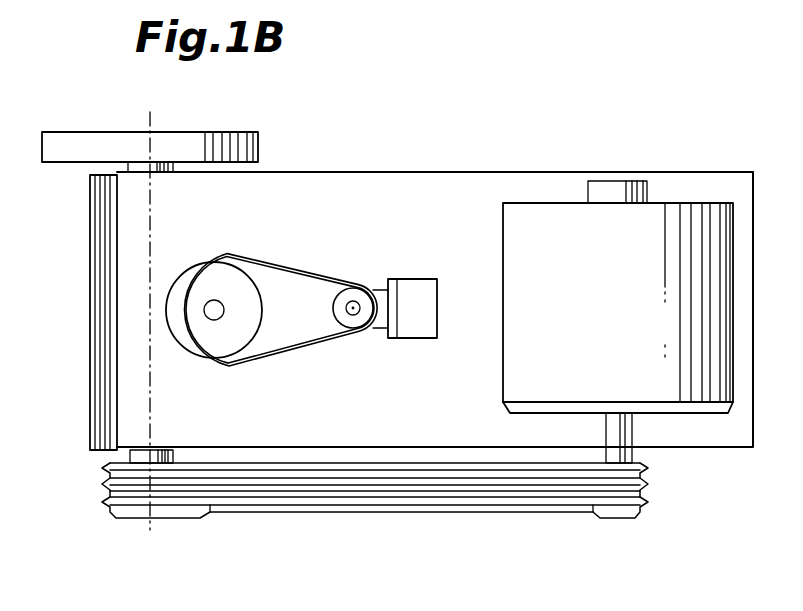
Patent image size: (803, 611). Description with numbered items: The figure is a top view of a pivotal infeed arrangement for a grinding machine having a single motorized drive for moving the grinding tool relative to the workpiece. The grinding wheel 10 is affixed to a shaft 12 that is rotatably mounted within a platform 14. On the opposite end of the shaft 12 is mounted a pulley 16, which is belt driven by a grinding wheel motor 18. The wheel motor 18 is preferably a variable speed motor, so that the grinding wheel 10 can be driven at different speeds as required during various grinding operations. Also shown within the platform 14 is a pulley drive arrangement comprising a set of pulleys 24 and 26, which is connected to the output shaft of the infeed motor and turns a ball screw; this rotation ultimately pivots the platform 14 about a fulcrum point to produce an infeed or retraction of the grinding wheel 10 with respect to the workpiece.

The grinding wheel 10 is at (114, 132).
The shaft 12 is at (128, 168).
The platform 14 is at (368, 172).
The pulley 16 is at (142, 518).
The grinding wheel motor 18 is at (512, 372).
The pulley 24 is at (353, 292).
The pulley 26 is at (224, 285).